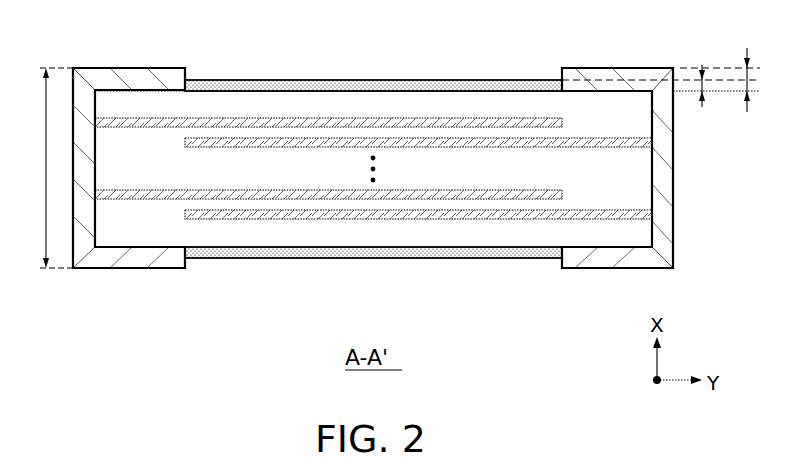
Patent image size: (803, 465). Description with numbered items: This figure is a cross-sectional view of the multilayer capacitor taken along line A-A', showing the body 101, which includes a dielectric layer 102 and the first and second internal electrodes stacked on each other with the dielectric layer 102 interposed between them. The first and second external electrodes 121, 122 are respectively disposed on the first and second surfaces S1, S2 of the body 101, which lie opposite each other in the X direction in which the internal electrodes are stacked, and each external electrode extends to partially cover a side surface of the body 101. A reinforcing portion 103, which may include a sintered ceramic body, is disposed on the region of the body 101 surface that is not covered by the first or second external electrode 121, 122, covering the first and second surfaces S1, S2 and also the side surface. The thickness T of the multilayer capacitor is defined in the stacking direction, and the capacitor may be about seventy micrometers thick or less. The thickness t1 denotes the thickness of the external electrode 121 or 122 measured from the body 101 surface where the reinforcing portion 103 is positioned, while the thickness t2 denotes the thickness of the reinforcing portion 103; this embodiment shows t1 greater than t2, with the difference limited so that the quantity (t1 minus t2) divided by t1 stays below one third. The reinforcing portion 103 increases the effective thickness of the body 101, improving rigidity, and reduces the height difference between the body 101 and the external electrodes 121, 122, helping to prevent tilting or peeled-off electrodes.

The body 101 is at (467, 92).
The dielectric layer 102 is at (263, 133).
The reinforcing portion 103 is at (372, 87).
The first external electrode 121 is at (105, 75).
The second external electrode 122 is at (617, 74).
The first surface S1 is at (150, 90).
The second surface S2 is at (155, 248).
The thickness of the multilayer capacitor T is at (50, 168).
The thickness of the external electrode t1 is at (723, 80).
The thickness of the reinforcing portion t2 is at (706, 84).